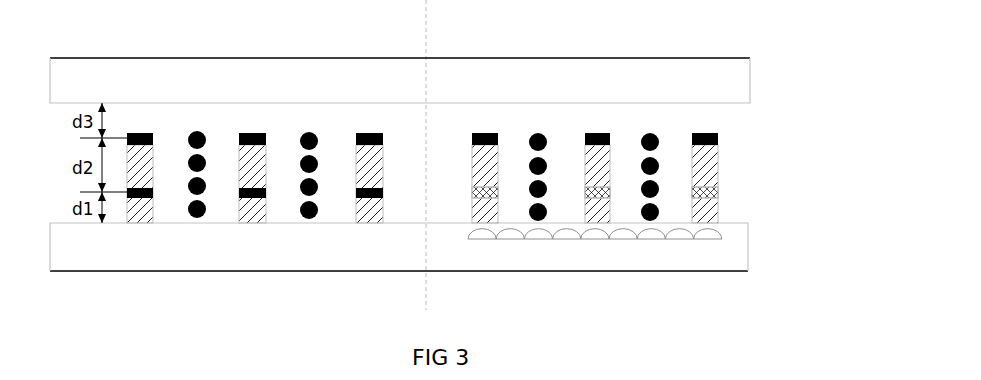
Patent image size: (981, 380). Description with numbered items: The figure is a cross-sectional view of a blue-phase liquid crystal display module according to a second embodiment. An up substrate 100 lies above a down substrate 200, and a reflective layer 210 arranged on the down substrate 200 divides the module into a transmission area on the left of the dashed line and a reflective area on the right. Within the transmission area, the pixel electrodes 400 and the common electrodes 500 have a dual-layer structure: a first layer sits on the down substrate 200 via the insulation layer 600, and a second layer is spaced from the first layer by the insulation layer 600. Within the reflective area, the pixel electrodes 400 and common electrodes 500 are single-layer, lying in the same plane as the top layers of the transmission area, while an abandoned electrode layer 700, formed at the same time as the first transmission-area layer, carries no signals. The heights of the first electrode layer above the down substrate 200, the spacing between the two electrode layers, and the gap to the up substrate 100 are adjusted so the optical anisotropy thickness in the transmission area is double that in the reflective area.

The up substrate 100 is at (665, 58).
The down substrate 200 is at (737, 271).
The reflective layer 210 is at (568, 239).
The pixel electrodes 400 is at (150, 133).
The common electrodes 500 is at (263, 133).
The insulation layer 600 is at (143, 222).
The abandoned electrode layer 700 is at (472, 190).